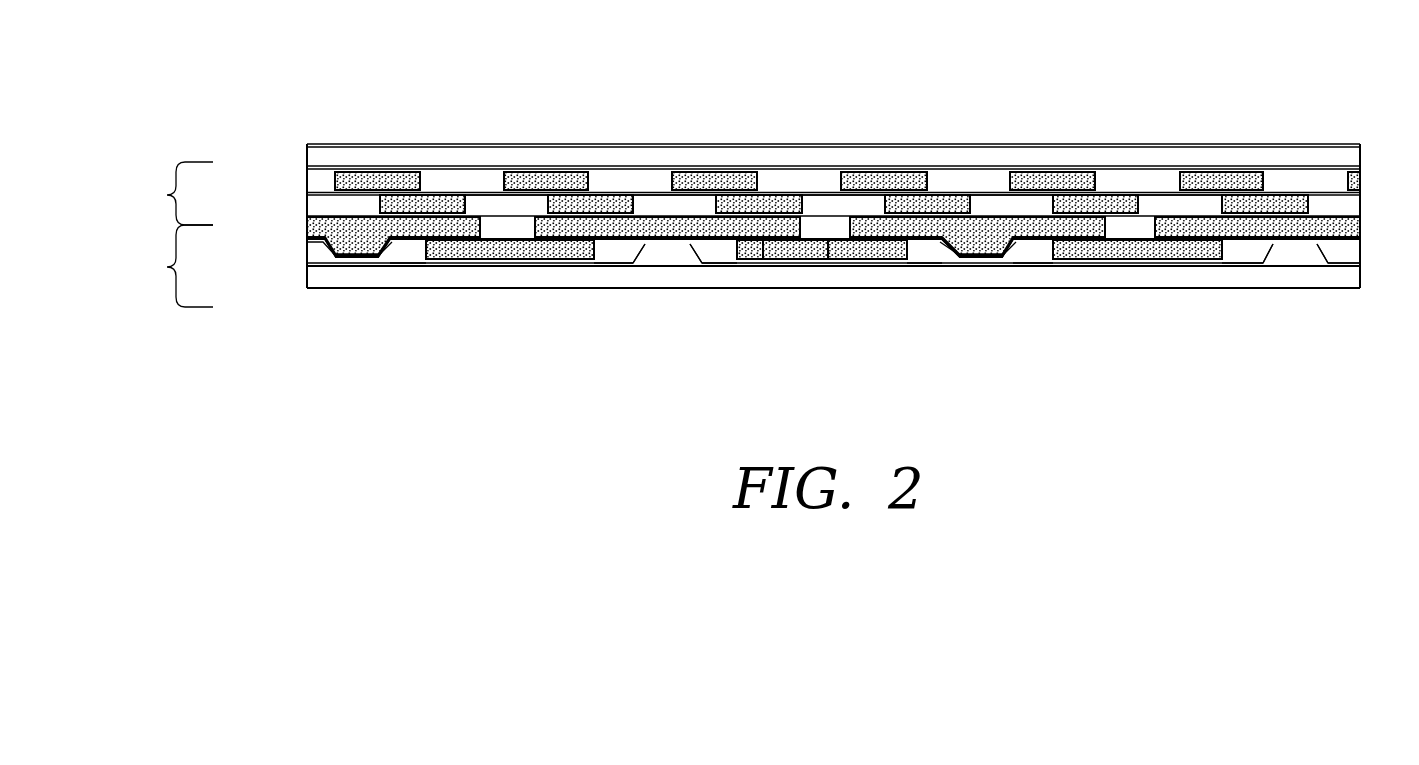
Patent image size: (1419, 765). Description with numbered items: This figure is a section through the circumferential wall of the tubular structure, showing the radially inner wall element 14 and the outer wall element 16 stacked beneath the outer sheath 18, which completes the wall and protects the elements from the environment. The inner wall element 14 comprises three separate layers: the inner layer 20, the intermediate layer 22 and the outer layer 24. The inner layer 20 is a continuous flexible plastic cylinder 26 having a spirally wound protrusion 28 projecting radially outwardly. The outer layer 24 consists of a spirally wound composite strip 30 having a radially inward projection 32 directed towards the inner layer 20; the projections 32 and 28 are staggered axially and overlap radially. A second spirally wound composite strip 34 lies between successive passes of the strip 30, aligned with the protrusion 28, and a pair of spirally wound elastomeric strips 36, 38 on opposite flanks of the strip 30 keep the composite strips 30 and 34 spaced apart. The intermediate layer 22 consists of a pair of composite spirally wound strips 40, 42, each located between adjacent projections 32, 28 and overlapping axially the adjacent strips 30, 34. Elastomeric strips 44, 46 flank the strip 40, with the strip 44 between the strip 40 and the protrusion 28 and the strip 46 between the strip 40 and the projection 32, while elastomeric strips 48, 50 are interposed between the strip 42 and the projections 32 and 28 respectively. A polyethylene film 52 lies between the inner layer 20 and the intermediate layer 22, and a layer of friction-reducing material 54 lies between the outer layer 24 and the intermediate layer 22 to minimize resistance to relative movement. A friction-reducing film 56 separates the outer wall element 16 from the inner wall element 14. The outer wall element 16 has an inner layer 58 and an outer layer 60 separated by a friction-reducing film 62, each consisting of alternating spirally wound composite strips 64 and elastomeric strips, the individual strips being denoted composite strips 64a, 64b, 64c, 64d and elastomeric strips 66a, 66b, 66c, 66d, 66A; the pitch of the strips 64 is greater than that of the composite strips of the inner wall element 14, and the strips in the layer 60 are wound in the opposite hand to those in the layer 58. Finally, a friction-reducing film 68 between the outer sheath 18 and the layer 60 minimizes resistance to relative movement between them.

The radially inner wall element 14 is at (171, 266).
The outer wall element 16 is at (171, 193).
The outer sheath 18 is at (318, 155).
The inner layer 20 is at (307, 277).
The intermediate layer 22 is at (307, 250).
The outer layer 24 is at (307, 229).
The continuous flexible plastic cylinder 26 is at (898, 278).
The spirally wound protrusion 28 is at (660, 253).
The spirally wound composite strip 30 is at (972, 240).
The radially inward projection 32 is at (350, 256).
The second spirally wound composite strip 34 is at (763, 252).
The spirally wound elastomeric strip 36 is at (1143, 228).
The spirally wound elastomeric strip 38 is at (832, 230).
The composite spirally wound strip 40 is at (555, 250).
The composite spirally wound strip 42 is at (800, 252).
The elastomeric strip 44 is at (613, 252).
The elastomeric strip 46 is at (398, 252).
The elastomeric strip 48 is at (940, 252).
The elastomeric strip 50 is at (713, 250).
The polyethylene film 52 is at (1235, 263).
The friction-reducing material 54 is at (1350, 265).
The friction-reducing film 56 is at (321, 215).
The inner layer 58 is at (307, 205).
The outer layer 60 is at (307, 183).
The friction-reducing film 62 is at (432, 193).
The composite strip 64 is at (714, 203).
The composite strip 64a is at (443, 200).
The composite strip 64b is at (607, 203).
The composite strip 64c is at (767, 197).
The composite strip 64d is at (933, 197).
The elastomeric strip 66a is at (490, 203).
The elastomeric strip 66b is at (650, 203).
The elastomeric strip 66c is at (822, 205).
The elastomeric strip 66d is at (1003, 202).
The elastomeric strip 66A is at (1177, 205).
The friction-reducing film 68 is at (548, 172).